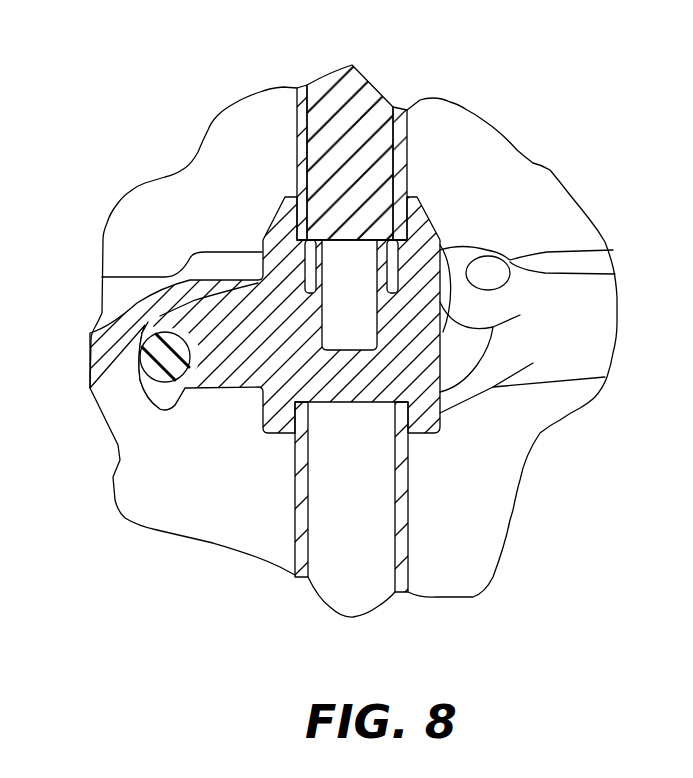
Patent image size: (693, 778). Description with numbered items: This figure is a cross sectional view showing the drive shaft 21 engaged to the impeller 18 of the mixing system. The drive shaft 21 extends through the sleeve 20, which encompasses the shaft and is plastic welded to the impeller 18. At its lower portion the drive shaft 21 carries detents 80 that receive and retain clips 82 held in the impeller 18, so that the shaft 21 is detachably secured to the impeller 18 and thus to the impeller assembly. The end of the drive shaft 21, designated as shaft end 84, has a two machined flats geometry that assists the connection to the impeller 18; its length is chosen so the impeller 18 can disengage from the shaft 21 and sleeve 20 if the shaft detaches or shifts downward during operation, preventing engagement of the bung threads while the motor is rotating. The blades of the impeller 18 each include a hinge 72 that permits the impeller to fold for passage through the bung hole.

The impeller 18 is at (186, 471).
The sleeve 20 is at (407, 167).
The drive shaft 21 is at (368, 169).
The hinge 72 is at (147, 402).
The detent 80 is at (377, 250).
The clip 82 is at (325, 263).
The shaft end 84 is at (352, 322).